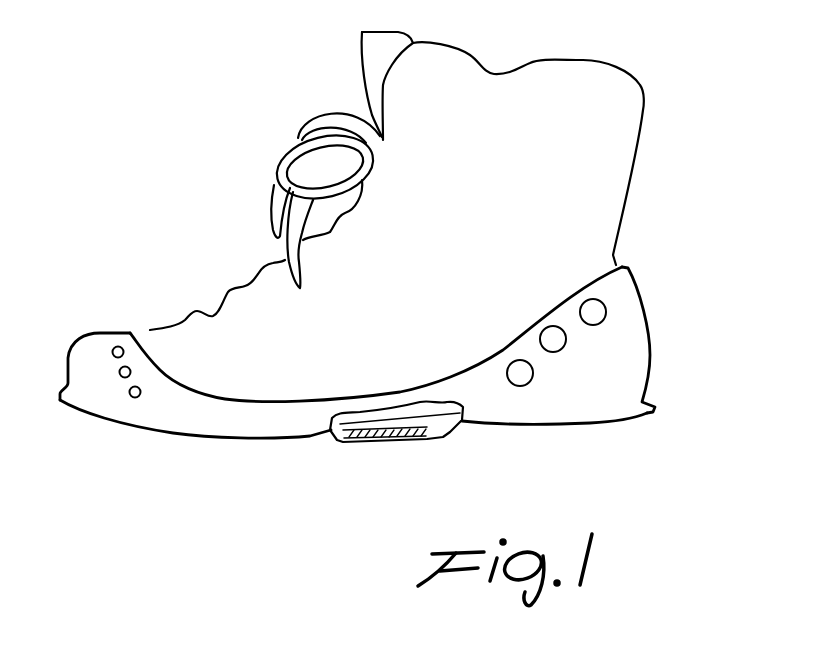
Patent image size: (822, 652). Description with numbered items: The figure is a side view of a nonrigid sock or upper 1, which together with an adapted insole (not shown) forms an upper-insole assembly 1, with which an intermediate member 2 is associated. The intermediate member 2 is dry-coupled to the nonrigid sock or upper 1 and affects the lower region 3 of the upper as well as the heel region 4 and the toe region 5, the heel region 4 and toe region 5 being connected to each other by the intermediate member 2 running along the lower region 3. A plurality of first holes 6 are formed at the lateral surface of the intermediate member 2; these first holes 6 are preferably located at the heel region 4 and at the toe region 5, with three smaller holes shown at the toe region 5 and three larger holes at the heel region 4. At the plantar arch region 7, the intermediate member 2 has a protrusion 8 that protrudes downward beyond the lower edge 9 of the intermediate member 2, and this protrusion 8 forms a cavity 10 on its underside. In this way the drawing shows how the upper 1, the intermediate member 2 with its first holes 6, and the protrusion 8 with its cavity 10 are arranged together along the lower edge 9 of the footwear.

The nonrigid sock or upper 1 is at (727, 12).
The intermediate member 2 is at (375, 427).
The lower region 3 is at (270, 488).
The heel region 4 is at (655, 315).
The toe region 5 is at (82, 333).
The first holes 6 is at (124, 350).
The plantar arch region 7 is at (402, 384).
The protrusion 8 is at (386, 473).
The lower edge 9 is at (198, 438).
The cavity 10 is at (360, 447).